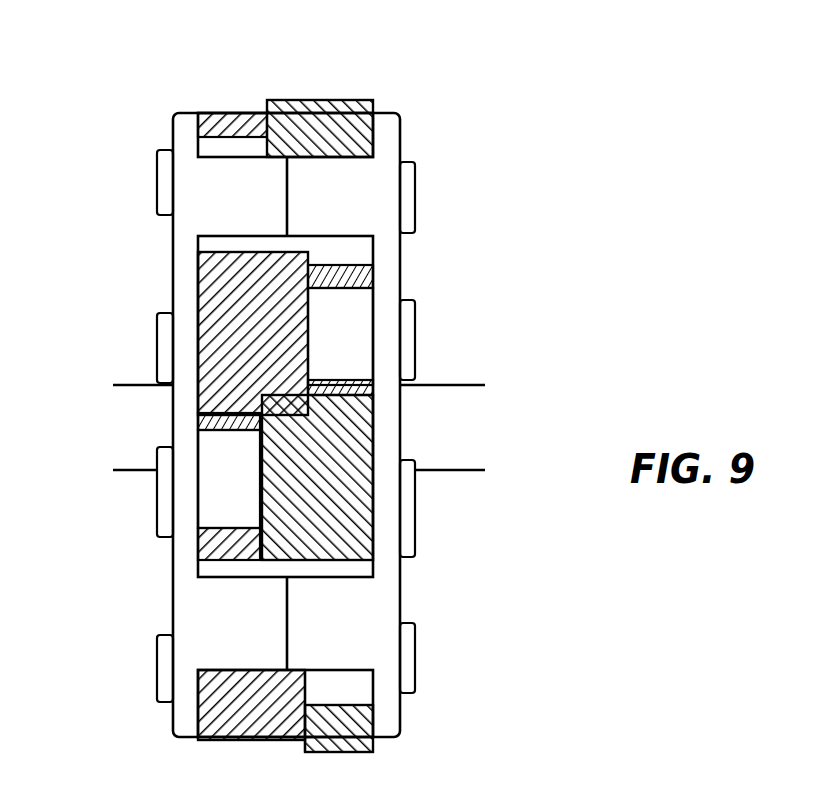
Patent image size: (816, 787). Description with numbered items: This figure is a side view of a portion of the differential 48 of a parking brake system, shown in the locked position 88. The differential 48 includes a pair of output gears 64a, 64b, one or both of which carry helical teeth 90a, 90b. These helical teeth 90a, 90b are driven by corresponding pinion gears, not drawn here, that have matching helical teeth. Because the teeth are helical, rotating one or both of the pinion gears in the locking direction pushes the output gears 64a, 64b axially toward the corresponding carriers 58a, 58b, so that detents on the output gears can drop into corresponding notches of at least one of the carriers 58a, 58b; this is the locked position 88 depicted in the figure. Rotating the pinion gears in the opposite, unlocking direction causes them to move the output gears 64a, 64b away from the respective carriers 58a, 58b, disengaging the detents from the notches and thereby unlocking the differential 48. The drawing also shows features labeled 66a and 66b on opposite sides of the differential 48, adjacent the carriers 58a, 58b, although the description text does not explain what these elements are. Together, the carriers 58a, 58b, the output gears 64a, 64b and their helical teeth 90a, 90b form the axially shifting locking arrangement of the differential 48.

The differential 48 is at (290, 36).
The locked position 88 is at (326, 90).
The carrier 58a is at (190, 152).
The carrier 58b is at (386, 152).
The helical teeth 90a is at (215, 303).
The helical teeth 90b is at (362, 392).
The output gear 64a is at (218, 540).
The output gear 64b is at (365, 275).
The first flange 66a is at (140, 386).
The second flange 66b is at (466, 469).